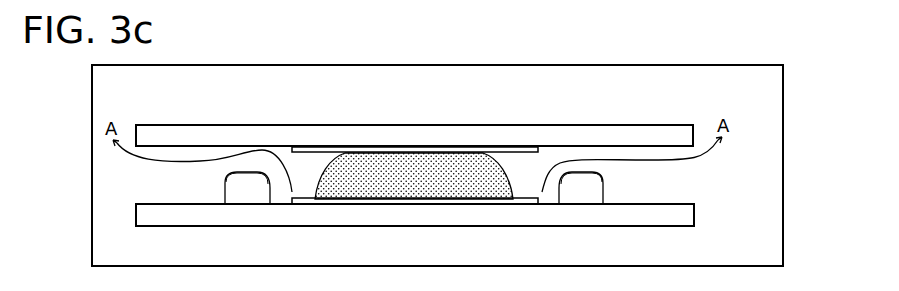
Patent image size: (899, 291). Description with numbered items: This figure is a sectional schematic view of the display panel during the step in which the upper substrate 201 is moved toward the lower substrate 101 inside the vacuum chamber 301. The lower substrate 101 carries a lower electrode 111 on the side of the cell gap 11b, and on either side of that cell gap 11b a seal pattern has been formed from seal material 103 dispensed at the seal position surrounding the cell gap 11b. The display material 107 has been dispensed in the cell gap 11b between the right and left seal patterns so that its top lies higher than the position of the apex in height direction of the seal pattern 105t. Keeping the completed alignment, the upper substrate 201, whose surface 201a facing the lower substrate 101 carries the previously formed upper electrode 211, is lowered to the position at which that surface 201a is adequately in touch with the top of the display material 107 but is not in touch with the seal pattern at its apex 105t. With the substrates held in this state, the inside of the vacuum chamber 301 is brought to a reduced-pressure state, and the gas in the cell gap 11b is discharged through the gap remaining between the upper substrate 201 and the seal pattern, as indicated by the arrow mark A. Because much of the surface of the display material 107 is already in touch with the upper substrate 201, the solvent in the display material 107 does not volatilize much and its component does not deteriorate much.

The vacuum chamber 301 is at (445, 64).
The upper substrate 201 is at (658, 136).
The surface of the upper substrate opposing the lower substrate 201a is at (553, 147).
The upper electrode 211 is at (357, 148).
The display material 107 is at (400, 162).
The lower electrode 111 is at (292, 192).
The cell gap 11b is at (525, 193).
The lower substrate 101 is at (695, 217).
The seal material 103 is at (243, 192).
The position of the apex in height direction of the seal pattern 105t is at (250, 172).